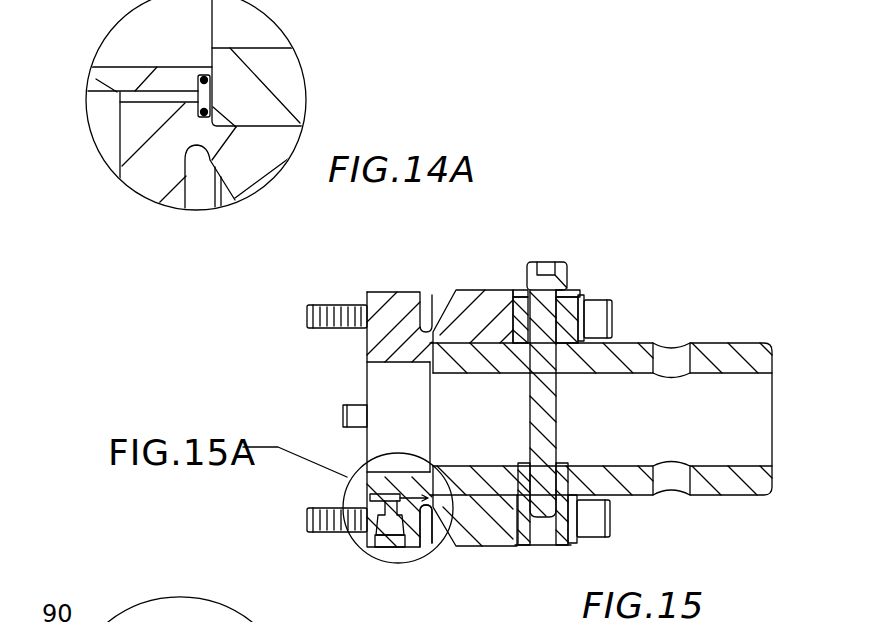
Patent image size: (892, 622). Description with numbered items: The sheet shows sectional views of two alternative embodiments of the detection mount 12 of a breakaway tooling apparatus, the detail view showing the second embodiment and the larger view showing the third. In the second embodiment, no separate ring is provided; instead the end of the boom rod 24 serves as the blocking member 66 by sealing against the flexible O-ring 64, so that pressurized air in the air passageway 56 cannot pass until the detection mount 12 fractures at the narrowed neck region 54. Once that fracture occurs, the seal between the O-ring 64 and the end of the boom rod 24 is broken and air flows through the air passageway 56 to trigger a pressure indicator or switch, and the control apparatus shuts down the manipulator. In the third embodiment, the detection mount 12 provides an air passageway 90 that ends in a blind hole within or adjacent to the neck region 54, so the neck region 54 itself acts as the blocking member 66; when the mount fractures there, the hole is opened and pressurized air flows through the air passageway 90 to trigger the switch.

In FIG. 15, the detection mount 12 is at (367, 352).
In FIG. 15, the boom rod 24 is at (713, 497).
In FIG. 15, the neck region 54 is at (440, 538).
In FIG. 14A, the air passageway 56 is at (103, 125).
In FIG. 14A, the O-ring 64 is at (217, 108).
In FIG. 14A, the blocking member 66 is at (212, 58).
In FIG. 15, the air passageway 90 is at (392, 536).